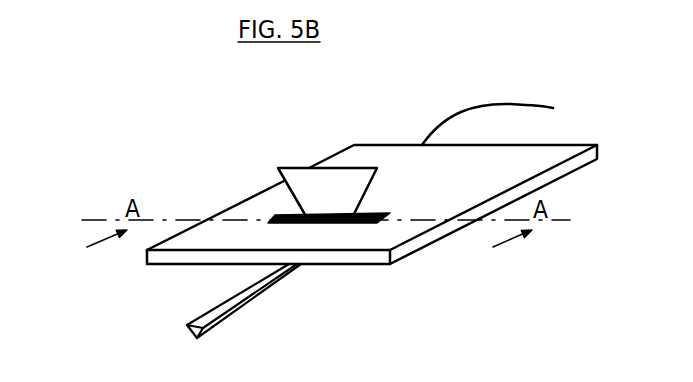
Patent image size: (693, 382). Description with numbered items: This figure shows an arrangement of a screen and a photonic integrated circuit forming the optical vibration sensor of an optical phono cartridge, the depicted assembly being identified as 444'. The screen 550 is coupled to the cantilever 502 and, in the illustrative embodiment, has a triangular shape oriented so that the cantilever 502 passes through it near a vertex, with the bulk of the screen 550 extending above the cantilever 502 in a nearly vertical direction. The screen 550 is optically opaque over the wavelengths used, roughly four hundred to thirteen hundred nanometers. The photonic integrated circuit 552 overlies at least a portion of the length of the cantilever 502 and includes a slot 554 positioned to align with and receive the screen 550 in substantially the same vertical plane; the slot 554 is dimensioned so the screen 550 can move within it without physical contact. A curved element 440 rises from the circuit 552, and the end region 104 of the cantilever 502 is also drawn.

The sensor assembly 444' is at (381, 163).
The photonic integrated circuit 552 is at (523, 163).
The slot 554 is at (378, 218).
The screen 550 is at (345, 201).
The curved lead 440 is at (450, 110).
The cantilever 502 is at (202, 309).
The bar tip 104 is at (188, 335).